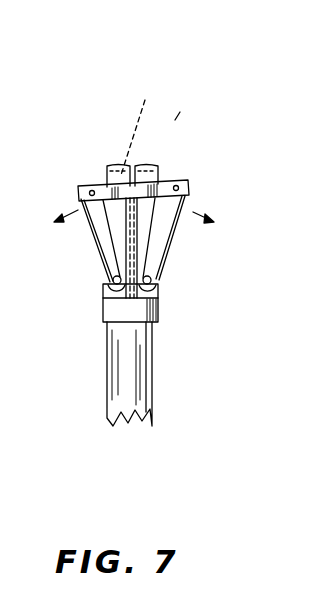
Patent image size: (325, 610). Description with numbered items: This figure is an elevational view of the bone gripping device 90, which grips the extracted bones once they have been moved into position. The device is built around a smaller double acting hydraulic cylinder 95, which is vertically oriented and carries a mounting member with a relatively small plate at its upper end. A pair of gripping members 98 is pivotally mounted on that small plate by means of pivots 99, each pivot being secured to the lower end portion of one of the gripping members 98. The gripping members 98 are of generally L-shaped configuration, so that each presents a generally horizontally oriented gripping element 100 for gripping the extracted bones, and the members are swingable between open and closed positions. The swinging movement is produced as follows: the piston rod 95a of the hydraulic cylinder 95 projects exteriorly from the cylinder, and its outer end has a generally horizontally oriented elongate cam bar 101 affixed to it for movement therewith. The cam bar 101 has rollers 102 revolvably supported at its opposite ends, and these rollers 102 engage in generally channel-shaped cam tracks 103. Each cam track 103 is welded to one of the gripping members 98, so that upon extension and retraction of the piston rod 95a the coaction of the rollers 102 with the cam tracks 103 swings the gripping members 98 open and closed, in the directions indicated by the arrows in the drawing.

The bone gripping device 90 is at (204, 73).
The smaller double acting hydraulic cylinder 95 is at (150, 414).
The piston rod 95a is at (130, 245).
The gripping members 98 is at (113, 164).
The pivots 99 is at (107, 284).
The gripping element 100 is at (138, 126).
The cam bar 101 is at (161, 176).
The rollers 102 is at (82, 182).
The cam tracks 103 is at (102, 263).